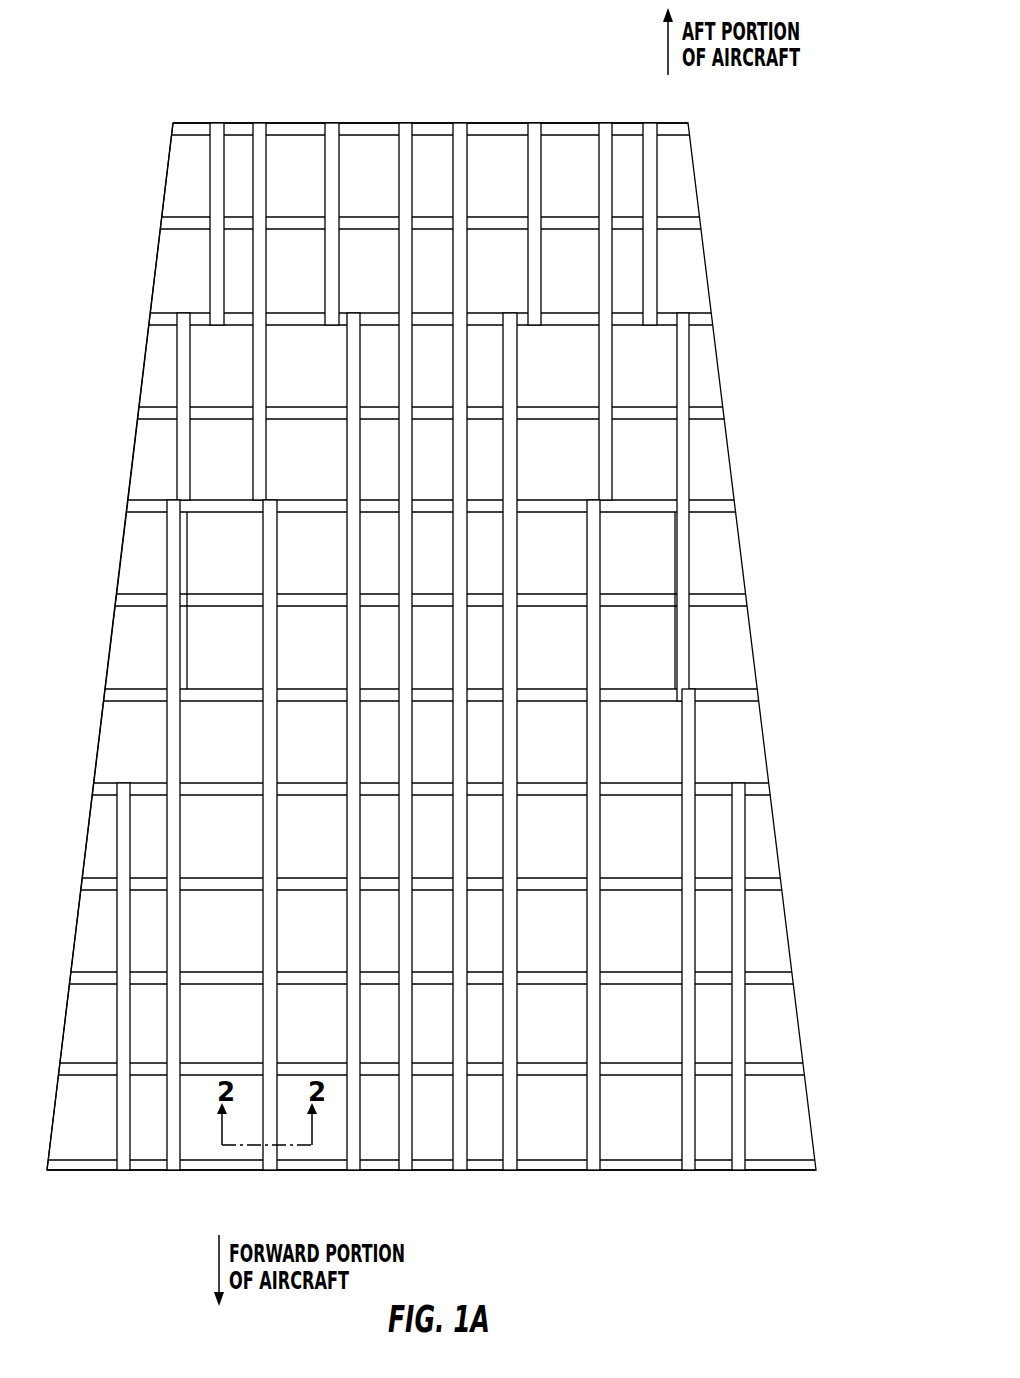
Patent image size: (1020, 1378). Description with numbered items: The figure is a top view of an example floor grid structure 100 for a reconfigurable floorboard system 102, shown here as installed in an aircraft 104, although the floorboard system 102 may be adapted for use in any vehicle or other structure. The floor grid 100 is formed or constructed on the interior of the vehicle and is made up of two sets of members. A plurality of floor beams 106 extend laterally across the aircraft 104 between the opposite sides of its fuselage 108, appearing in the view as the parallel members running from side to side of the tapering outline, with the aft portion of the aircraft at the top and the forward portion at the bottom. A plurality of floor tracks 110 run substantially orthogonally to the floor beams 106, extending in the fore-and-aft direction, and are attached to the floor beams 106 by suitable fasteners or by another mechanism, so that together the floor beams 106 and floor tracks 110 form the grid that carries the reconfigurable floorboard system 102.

The floor grid structure 100 is at (489, 112).
The reconfigurable floorboard system 102 is at (105, 404).
The aircraft 104 is at (108, 542).
The floor beam 106 is at (673, 123).
The fuselage 108 is at (96, 748).
The floor track 110 is at (757, 1192).